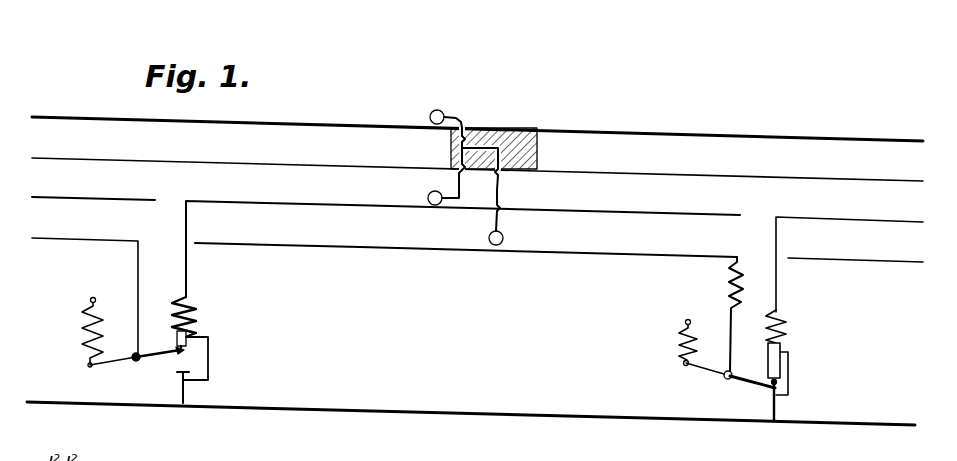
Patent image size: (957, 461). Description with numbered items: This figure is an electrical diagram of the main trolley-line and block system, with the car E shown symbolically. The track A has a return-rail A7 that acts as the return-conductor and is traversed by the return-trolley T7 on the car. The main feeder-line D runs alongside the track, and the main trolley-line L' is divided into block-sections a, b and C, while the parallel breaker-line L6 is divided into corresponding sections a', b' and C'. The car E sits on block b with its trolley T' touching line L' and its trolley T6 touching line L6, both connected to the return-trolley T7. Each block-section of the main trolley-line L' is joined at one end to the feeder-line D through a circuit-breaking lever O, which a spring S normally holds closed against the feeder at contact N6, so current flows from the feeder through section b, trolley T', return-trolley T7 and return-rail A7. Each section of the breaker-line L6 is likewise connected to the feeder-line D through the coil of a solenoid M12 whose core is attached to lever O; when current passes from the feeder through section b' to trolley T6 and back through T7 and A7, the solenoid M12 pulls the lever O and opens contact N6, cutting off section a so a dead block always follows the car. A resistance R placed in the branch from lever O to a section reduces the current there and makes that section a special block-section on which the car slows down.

The return-rail A7 is at (477, 129).
The track A is at (477, 169).
The car E is at (505, 148).
The return-trolley T7 is at (436, 146).
The breaker-line trolley T6 is at (423, 192).
The main trolley T' is at (493, 198).
The block-section of breaker-line a' is at (93, 205).
The block-section of main line a is at (85, 294).
The block-section of breaker-line b' is at (268, 249).
The block-section of main line b is at (277, 256).
The breaker-line L6 is at (545, 218).
The main trolley-line L' is at (548, 257).
The block-section of breaker-line C' is at (849, 264).
The block-section of main line C is at (855, 268).
The resistance R is at (721, 314).
The spring S is at (376, 333).
The circuit-breaking lever O is at (432, 377).
The solenoid M12 is at (498, 341).
The contact N6 is at (187, 370).
The main feeder-line D is at (471, 409).